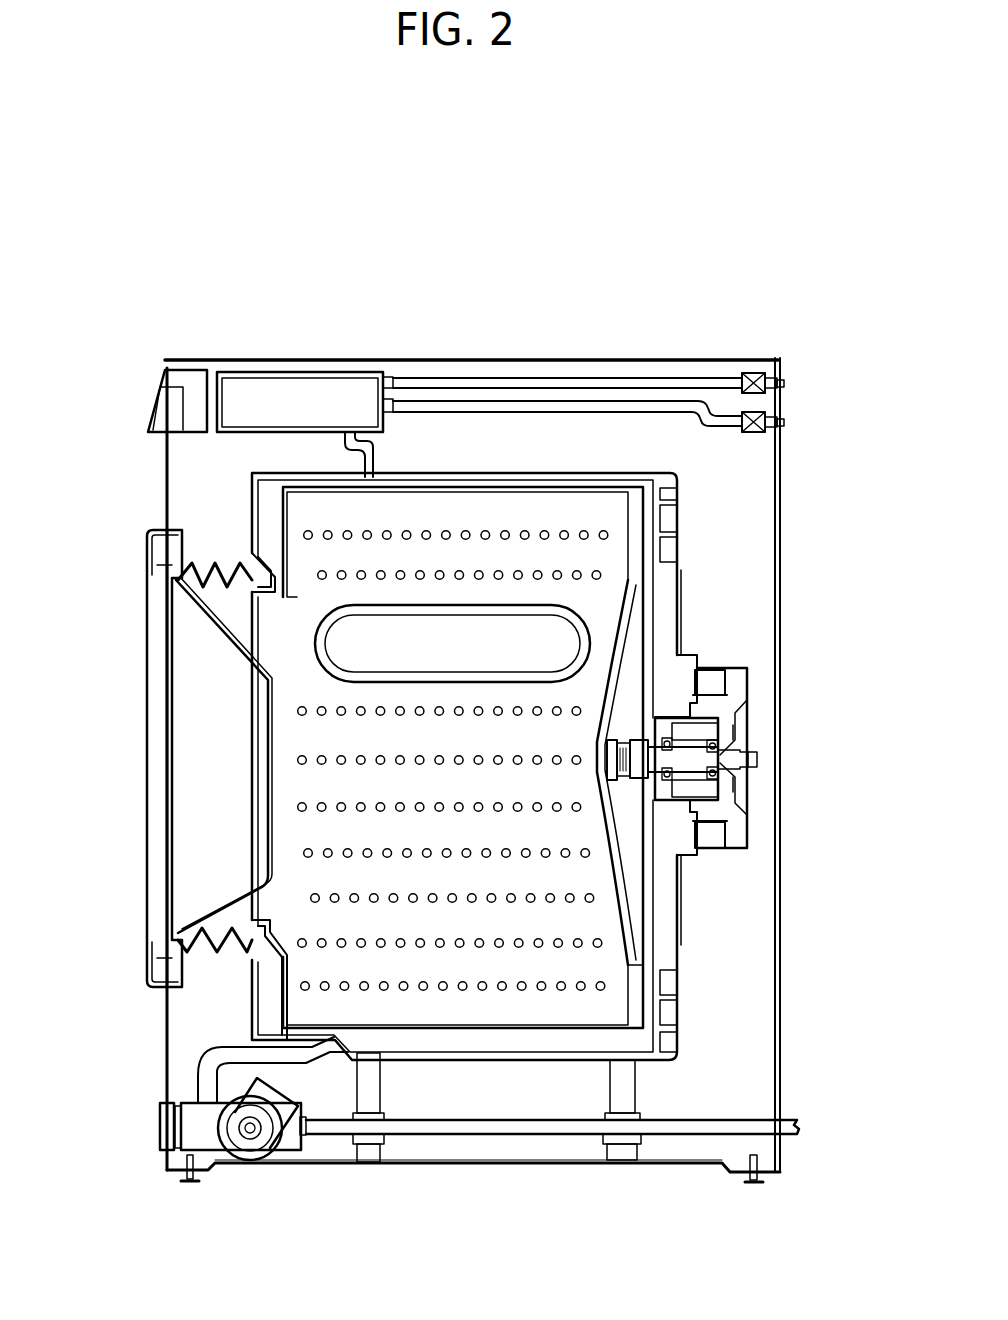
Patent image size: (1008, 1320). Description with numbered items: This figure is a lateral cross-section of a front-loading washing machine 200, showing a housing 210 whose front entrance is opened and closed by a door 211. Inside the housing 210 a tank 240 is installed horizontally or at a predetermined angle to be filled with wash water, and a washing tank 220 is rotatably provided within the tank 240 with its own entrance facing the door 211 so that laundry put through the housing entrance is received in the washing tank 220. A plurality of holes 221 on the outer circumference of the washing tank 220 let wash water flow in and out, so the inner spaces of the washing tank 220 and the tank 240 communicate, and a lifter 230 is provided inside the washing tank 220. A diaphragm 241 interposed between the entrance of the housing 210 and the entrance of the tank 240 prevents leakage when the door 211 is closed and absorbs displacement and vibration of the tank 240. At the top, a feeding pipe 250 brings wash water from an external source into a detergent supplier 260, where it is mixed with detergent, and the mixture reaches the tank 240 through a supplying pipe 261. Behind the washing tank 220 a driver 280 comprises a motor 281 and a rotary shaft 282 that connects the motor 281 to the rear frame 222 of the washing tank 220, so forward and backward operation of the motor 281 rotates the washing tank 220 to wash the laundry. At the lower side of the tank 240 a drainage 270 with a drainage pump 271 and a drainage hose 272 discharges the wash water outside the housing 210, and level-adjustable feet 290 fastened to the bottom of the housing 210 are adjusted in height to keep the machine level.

The front-loading washing machine 200 is at (82, 312).
The housing 210 is at (780, 479).
The door 211 is at (150, 735).
The washing tank 220 is at (466, 653).
The holes 221 is at (317, 807).
The rear frame 222 is at (634, 678).
The lifter 230 is at (317, 665).
The tank 240 is at (562, 473).
The diaphragm 241 is at (205, 945).
The feeding pipe 250 is at (682, 405).
The detergent supplier 260 is at (278, 375).
The supplying pipe 261 is at (363, 445).
The drainage 270 is at (202, 1145).
The drainage pump 271 is at (252, 1135).
The drainage hose 272 is at (583, 1137).
The driver 280 is at (741, 758).
The motor 281 is at (738, 832).
The rotary shaft 282 is at (740, 760).
The level-adjustable foot 290 is at (772, 1183).